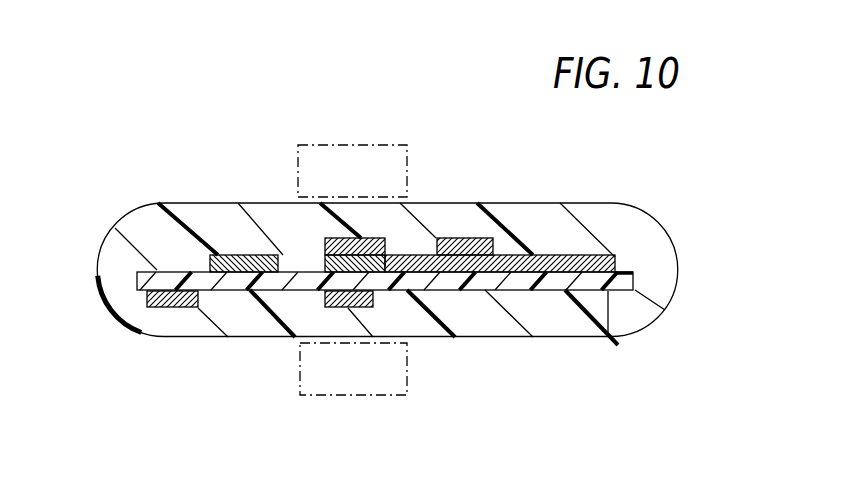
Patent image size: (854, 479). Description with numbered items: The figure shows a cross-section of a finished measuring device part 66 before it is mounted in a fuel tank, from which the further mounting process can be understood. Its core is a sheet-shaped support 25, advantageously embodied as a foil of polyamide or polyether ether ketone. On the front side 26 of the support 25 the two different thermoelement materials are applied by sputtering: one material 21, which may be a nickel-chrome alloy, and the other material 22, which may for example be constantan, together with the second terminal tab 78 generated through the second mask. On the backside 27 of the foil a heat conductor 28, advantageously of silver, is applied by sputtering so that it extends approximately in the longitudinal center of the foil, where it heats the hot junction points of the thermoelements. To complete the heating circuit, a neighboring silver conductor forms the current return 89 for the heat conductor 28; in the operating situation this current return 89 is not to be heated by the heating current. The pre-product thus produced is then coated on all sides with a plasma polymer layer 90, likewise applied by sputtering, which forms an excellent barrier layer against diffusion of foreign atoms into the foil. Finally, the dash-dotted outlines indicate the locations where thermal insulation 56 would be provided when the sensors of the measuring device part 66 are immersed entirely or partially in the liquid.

The measuring device part 66 is at (638, 184).
The plasma polymer layer 90 is at (131, 297).
The support 25 is at (636, 282).
The backside 27 is at (616, 342).
The front side 26 is at (623, 268).
The first material 21 is at (537, 255).
The second material 22 is at (325, 238).
The second terminal tab 78 is at (242, 255).
The current return 89 is at (178, 307).
The heat conductor 28 is at (365, 308).
The thermal insulation 56 is at (387, 158).